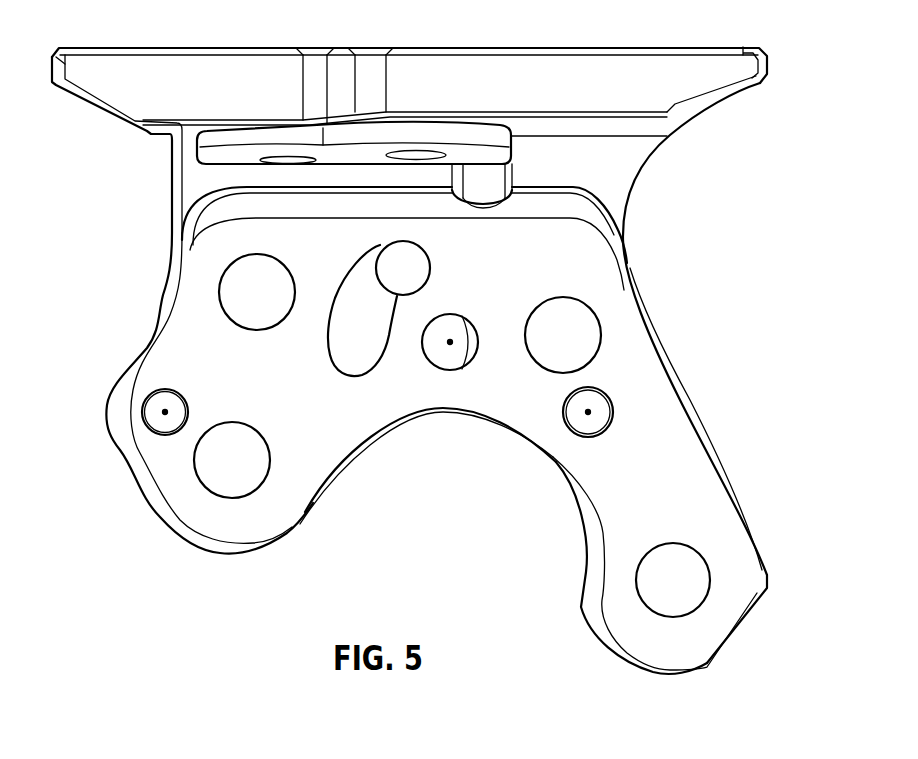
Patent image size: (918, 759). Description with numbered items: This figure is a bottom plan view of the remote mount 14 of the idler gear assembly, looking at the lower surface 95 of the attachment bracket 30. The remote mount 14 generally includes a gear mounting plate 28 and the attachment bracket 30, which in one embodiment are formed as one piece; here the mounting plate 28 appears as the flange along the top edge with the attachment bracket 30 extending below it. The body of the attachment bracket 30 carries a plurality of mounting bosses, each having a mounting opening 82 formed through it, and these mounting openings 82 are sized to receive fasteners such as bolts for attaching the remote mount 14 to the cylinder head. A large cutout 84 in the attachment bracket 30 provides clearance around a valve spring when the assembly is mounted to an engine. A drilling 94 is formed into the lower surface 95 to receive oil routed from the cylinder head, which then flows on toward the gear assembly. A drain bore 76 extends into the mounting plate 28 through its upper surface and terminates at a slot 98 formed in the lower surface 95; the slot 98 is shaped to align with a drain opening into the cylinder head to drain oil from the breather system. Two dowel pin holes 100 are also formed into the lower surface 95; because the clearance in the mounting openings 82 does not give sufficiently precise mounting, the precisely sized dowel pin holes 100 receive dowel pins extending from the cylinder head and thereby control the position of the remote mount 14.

The remote mount 14 is at (800, 67).
The gear mounting plate 28 is at (170, 74).
The attachment bracket 30 is at (710, 618).
The drain bore 76 is at (383, 260).
The mounting opening 82 is at (277, 282).
The cutout 84 is at (398, 410).
The drilling 94 is at (448, 316).
The lower surface 95 is at (308, 406).
The slot 98 is at (367, 363).
The dowel pin holes 100 is at (153, 413).